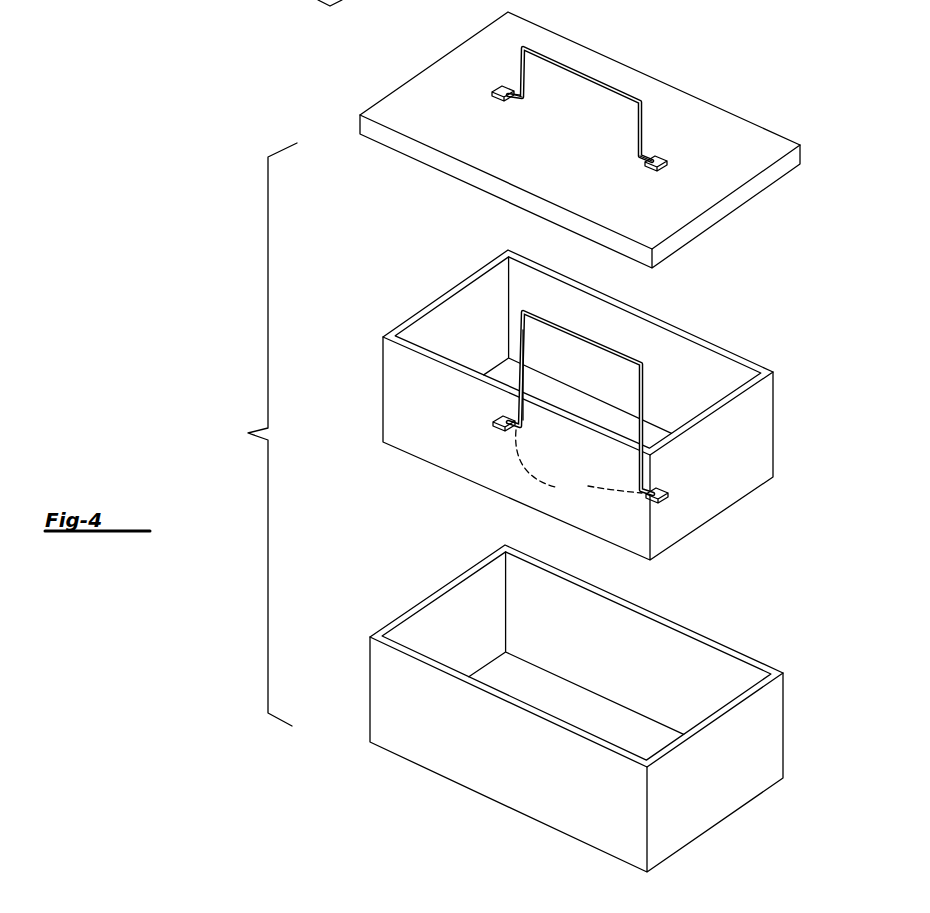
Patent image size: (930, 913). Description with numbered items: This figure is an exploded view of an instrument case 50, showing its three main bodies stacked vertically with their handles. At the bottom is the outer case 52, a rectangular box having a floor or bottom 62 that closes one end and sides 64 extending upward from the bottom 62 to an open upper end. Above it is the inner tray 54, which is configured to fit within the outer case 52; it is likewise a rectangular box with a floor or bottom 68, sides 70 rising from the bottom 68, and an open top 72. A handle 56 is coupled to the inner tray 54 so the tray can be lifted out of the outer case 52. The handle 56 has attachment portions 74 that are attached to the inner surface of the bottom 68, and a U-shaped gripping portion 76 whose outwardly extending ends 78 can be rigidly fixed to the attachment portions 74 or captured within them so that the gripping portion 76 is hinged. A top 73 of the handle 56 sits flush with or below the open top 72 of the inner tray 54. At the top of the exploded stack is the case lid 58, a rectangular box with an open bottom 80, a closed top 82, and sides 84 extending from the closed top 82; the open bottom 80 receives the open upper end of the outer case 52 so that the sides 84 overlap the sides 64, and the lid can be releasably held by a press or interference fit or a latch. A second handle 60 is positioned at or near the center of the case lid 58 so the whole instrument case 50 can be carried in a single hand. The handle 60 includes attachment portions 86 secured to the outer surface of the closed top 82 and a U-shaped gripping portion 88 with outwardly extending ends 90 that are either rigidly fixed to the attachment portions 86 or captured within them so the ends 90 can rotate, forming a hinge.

The instrument case 50 is at (523, 436).
The outer case 52 is at (552, 708).
The inner tray 54 is at (559, 402).
The handle 56 is at (630, 357).
The case lid 58 is at (574, 134).
The handle 60 is at (597, 106).
The bottom 62 is at (576, 643).
The sides 64 is at (352, 669).
The bottom 68 is at (660, 423).
The sides 70 is at (578, 439).
The open top 72 is at (612, 388).
The top 73 is at (593, 340).
The attachment portions 74 is at (494, 421).
The gripping portion 76 is at (605, 340).
The ends 78 is at (579, 464).
The open bottom 80 is at (574, 134).
The closed top 82 is at (580, 130).
The sides 84 is at (458, 47).
The attachment portions 86 is at (492, 90).
The gripping portion 88 is at (592, 87).
The ends 90 is at (516, 100).